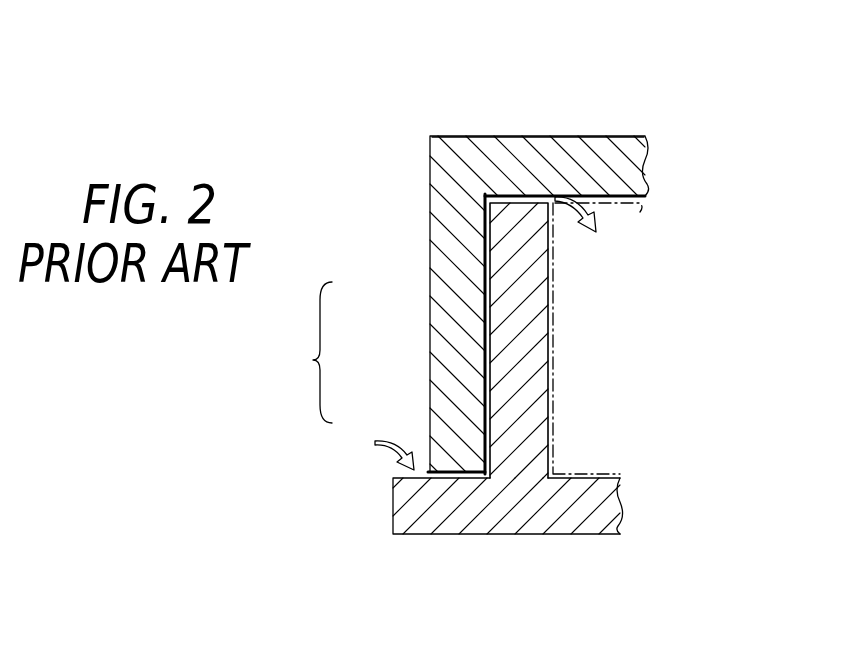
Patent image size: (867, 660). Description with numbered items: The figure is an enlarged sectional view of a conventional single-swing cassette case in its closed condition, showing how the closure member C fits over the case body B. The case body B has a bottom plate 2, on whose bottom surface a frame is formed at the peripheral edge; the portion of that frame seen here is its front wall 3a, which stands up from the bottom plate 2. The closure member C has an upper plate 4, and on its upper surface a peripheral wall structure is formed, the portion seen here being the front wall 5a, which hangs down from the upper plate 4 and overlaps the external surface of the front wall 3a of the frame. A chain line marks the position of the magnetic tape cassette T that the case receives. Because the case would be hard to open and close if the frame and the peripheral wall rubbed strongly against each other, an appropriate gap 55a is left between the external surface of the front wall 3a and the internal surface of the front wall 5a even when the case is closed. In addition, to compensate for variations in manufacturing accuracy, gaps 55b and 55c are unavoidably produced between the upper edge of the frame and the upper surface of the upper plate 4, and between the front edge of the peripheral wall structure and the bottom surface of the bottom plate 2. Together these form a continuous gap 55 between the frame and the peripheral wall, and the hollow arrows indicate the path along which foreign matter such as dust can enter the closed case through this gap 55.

The bottom plate 2 is at (590, 517).
The front wall 3a is at (535, 300).
The upper plate 4 is at (613, 148).
The front wall 5a is at (440, 232).
The gap 55 is at (310, 352).
The gap 55a is at (483, 344).
The gap 55b is at (520, 204).
The gap 55c is at (453, 472).
The closure member C is at (548, 136).
The case body B is at (552, 534).
The magnetic tape cassette T is at (549, 437).